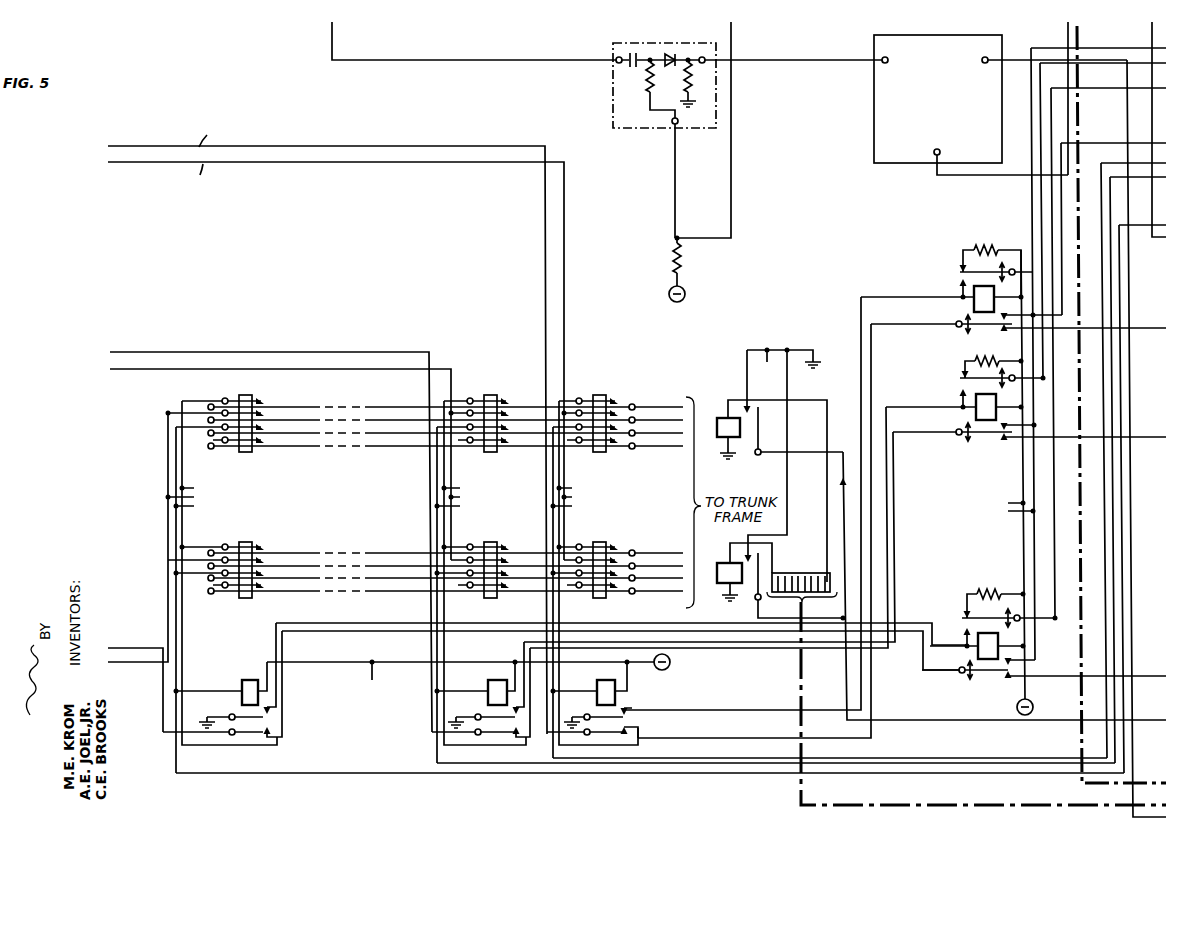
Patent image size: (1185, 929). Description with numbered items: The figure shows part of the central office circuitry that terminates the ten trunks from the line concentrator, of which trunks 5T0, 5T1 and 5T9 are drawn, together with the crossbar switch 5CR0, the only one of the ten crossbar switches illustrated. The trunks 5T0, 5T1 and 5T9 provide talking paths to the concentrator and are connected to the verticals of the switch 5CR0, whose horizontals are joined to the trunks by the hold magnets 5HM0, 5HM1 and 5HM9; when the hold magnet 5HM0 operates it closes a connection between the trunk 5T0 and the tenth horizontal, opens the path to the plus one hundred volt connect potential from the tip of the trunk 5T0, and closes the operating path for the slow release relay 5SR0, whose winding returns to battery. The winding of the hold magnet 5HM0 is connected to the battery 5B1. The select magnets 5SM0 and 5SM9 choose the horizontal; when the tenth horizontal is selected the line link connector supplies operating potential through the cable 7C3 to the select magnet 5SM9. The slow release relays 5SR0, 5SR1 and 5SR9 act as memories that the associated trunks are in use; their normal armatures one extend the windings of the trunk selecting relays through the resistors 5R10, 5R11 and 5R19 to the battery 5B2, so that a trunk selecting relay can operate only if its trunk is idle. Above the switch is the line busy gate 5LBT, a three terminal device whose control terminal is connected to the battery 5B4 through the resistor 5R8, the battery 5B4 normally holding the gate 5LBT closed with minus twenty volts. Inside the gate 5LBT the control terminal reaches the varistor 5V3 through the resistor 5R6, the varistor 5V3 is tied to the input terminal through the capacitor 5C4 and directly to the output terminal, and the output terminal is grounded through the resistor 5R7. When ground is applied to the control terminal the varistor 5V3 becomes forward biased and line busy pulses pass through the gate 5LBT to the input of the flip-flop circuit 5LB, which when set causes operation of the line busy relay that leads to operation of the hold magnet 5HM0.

The trunk 5T0 is at (336, 426).
The trunk 5T1 is at (280, 529).
The trunk 5T9 is at (138, 572).
The crossbar switch 5CR0 is at (290, 336).
The gate 5LBT is at (711, 43).
The capacitor 5C4 is at (631, 69).
The resistor 5R6 is at (647, 91).
The varistor 5V3 is at (673, 68).
The resistor 5R7 is at (690, 96).
The resistor 5R8 is at (683, 259).
The battery 5B4 is at (686, 294).
The flip-flop circuit 5LB is at (1000, 105).
The resistor 5R10 is at (986, 248).
The slow release relay 5SR0 is at (974, 298).
The resistor 5R11 is at (975, 361).
The slow release relay 5SR1 is at (976, 410).
The resistor 5R19 is at (996, 593).
The slow release relay 5SR9 is at (978, 648).
The battery 5B2 is at (1017, 707).
The select magnet 5SM0 is at (718, 418).
The select magnet 5SM9 is at (720, 583).
The cable 7C3 is at (800, 708).
The hold magnet 5HM9 is at (246, 680).
The hold magnet 5HM1 is at (496, 681).
The hold magnet 5HM0 is at (615, 691).
The battery 5B1 is at (670, 662).